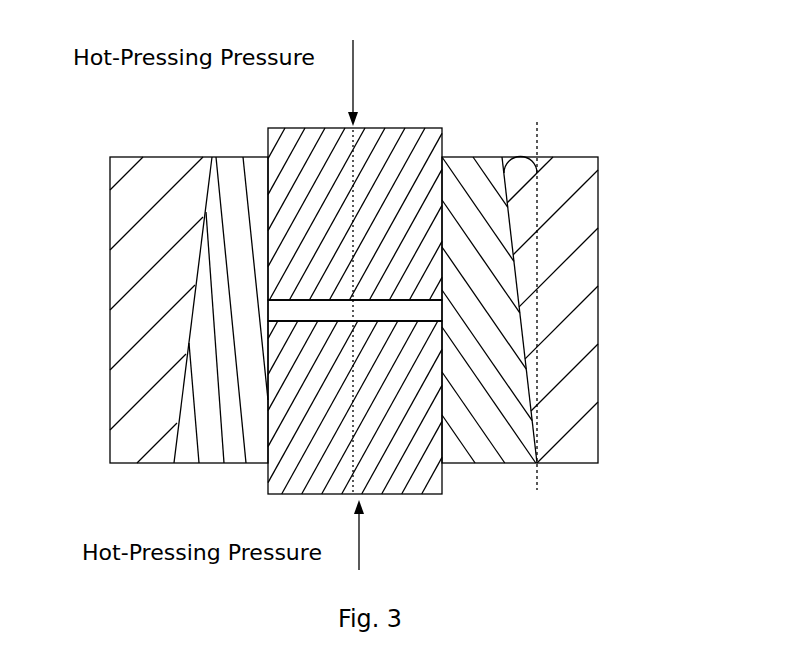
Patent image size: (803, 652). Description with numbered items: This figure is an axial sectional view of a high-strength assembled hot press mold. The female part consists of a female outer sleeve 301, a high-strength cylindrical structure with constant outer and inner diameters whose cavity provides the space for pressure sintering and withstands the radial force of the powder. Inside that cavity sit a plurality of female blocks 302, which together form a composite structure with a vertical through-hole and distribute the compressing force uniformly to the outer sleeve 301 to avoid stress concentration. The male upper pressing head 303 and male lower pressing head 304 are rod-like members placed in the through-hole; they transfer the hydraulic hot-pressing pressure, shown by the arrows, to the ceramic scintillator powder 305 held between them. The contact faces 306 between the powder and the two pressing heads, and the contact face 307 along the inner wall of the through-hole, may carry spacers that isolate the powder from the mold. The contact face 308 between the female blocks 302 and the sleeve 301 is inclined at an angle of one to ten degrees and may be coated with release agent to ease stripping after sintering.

The female outer sleeve 301 is at (598, 186).
The female blocks 302 is at (470, 157).
The male upper pressing head 303 is at (391, 127).
The male lower pressing head 304 is at (420, 495).
The ceramic scintillator powder 305 is at (413, 302).
The contact face 306 is at (330, 298).
The contact face 307 is at (442, 305).
The contact face 308 is at (535, 432).